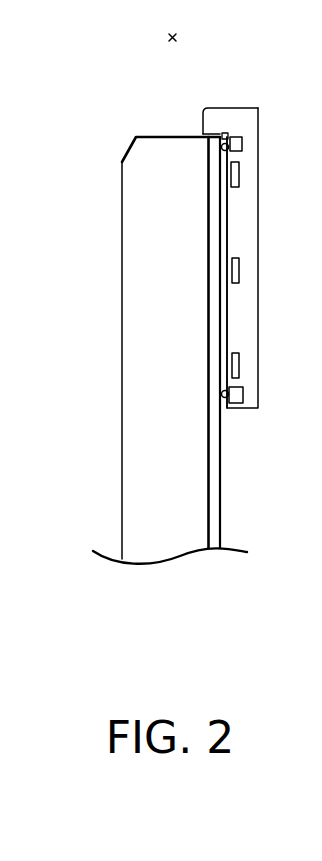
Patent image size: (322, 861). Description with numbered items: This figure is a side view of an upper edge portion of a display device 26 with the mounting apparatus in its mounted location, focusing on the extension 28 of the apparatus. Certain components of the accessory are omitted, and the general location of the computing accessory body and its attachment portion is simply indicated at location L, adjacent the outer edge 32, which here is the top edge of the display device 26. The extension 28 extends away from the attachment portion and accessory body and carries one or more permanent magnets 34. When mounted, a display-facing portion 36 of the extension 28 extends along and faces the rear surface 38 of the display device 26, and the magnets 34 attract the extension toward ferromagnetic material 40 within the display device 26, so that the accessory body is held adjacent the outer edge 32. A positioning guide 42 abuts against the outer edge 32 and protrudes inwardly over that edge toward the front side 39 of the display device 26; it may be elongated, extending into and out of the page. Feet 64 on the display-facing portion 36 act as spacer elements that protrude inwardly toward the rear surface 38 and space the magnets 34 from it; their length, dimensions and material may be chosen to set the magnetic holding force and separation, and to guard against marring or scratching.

The location L is at (173, 30).
The display device 26 is at (142, 349).
The extension 28 is at (256, 251).
The outer edge 32 is at (153, 136).
The permanent magnets 34 is at (240, 174).
The display-facing portion 36 is at (226, 319).
The rear surface 38 is at (222, 477).
The front side 39 is at (121, 196).
The ferromagnetic material 40 is at (207, 527).
The positioning guide 42 is at (214, 113).
The feet 64 is at (227, 136).